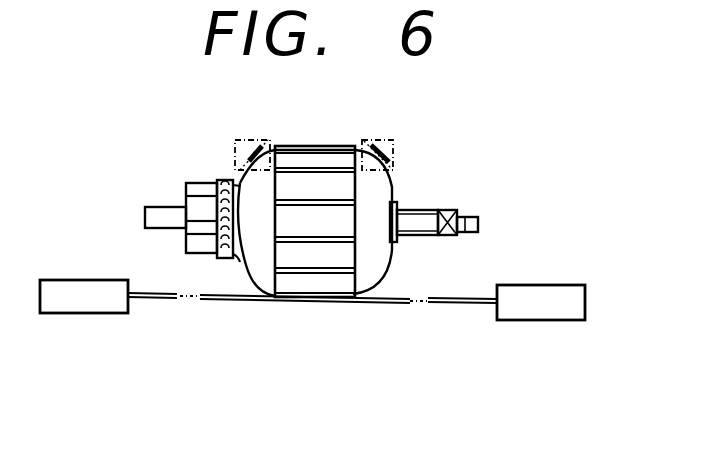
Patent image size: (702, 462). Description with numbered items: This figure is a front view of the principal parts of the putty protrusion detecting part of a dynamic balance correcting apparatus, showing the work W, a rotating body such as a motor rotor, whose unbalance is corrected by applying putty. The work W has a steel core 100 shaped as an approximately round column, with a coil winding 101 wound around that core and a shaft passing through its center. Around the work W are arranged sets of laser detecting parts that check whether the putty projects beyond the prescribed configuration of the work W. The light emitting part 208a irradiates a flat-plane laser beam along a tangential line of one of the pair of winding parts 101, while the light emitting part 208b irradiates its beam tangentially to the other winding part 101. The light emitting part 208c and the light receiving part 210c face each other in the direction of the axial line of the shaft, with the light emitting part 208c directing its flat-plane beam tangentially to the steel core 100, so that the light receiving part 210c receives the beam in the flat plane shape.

The steel core 100 is at (377, 258).
The coil winding 101 is at (328, 255).
The work W is at (378, 191).
The light emitting part 208a is at (252, 140).
The light emitting part 208b is at (386, 140).
The light emitting part 208c is at (97, 303).
The light receiving part 210c is at (550, 312).